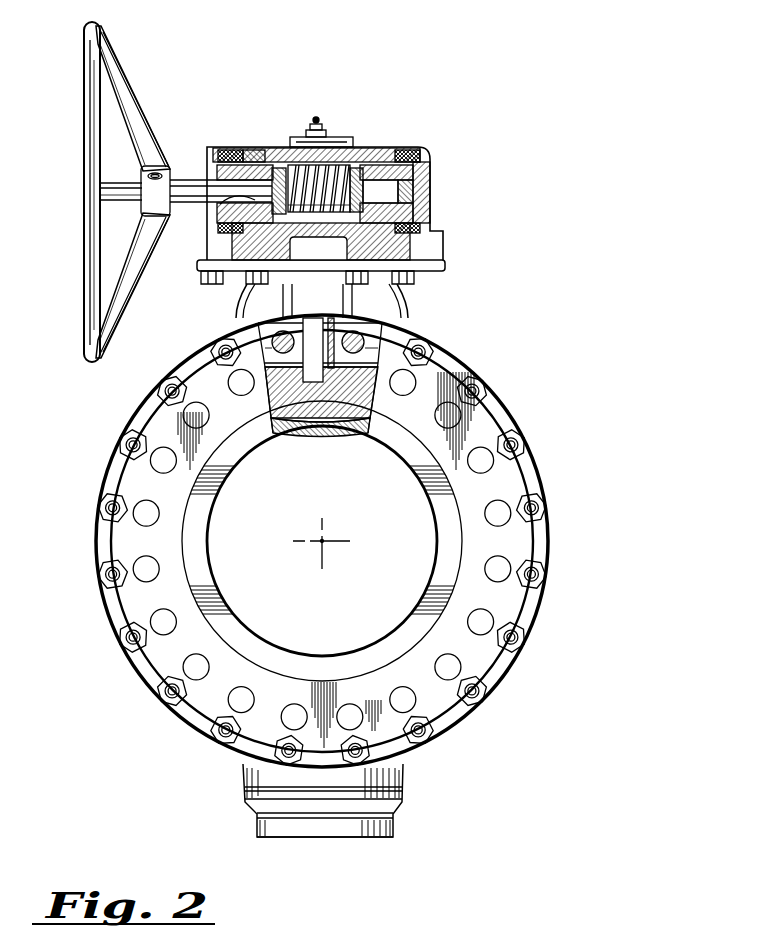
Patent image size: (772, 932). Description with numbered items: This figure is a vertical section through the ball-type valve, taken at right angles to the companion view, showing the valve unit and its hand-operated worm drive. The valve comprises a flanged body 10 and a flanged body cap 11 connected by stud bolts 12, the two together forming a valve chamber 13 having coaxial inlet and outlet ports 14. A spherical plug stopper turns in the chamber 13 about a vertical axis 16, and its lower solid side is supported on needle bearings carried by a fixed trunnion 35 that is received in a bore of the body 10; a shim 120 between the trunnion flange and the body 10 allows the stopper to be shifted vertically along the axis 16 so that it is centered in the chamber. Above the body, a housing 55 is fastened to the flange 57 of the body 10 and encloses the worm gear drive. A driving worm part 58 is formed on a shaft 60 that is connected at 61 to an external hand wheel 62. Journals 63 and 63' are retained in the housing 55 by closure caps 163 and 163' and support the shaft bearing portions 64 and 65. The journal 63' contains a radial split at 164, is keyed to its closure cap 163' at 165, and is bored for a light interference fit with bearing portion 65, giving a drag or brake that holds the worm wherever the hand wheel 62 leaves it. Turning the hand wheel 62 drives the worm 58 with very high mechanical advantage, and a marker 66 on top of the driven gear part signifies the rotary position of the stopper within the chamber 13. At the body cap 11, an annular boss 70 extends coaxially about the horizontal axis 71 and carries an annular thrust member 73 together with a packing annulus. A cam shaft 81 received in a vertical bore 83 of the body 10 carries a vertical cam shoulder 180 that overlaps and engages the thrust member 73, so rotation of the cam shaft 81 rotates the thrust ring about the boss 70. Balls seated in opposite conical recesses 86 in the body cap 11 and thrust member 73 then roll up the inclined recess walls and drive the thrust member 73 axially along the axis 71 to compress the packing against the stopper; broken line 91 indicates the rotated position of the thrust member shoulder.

The flanged body 10 is at (549, 556).
The flanged body cap 11 is at (488, 426).
The stud bolts 12 is at (484, 383).
The valve chamber 13 is at (385, 332).
The inlet and outlet ports 14 is at (240, 602).
The vertical axis 16 is at (326, 518).
The fixed trunnion 35 is at (345, 832).
The housing 55 is at (372, 147).
The flange 57 is at (440, 266).
The driving worm part 58 is at (355, 147).
The shaft 60 is at (186, 185).
The connection to hand wheel 61 is at (158, 168).
The hand wheel 62 is at (84, 187).
The journal 63 is at (443, 190).
The journal 63' is at (266, 139).
The shaft bearing portion 64 is at (392, 190).
The shaft bearing portion 65 is at (228, 206).
The marker 66 is at (314, 118).
The annular boss 70 is at (346, 432).
The horizontal axis 71 is at (325, 541).
The annular thrust member 73 is at (318, 426).
The cam shaft 81 is at (305, 333).
The vertical bore 83 is at (262, 318).
The conical recesses 86 is at (500, 511).
The broken line 91 is at (300, 382).
The shim 120 is at (257, 814).
The closure cap 163 is at (417, 193).
The closure cap 163' is at (206, 224).
The radial split 164 is at (311, 248).
The key 165 is at (250, 150).
The cam shoulder 180 is at (355, 380).